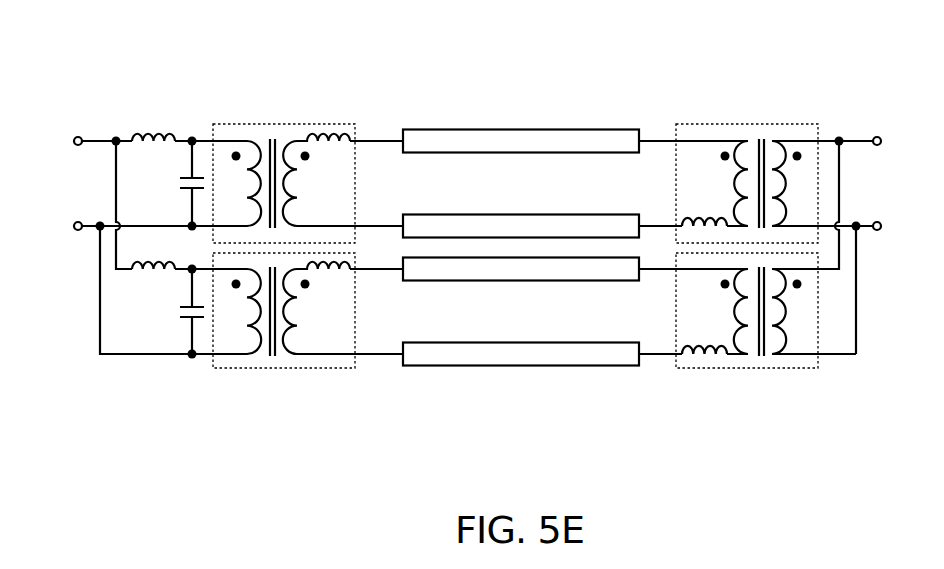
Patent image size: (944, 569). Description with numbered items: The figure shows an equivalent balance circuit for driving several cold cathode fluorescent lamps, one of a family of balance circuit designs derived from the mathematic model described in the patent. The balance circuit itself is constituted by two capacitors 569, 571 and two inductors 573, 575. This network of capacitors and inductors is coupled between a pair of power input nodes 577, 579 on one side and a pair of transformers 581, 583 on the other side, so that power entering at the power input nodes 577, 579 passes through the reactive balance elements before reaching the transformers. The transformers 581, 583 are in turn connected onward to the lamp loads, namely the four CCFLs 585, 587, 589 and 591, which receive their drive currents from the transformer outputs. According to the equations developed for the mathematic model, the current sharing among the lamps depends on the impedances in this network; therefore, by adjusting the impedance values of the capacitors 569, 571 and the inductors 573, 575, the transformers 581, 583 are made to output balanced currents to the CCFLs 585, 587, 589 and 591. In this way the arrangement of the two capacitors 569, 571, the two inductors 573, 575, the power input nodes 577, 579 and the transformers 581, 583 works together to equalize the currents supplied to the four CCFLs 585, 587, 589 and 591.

The capacitor 569 is at (203, 172).
The capacitor 571 is at (205, 310).
The inductor 573 is at (155, 122).
The inductor 575 is at (157, 280).
The power input node 577 is at (65, 133).
The power input node 579 is at (73, 228).
The transformer 581 is at (303, 123).
The transformer 583 is at (315, 372).
The CCFL 585 is at (593, 135).
The CCFL 587 is at (448, 223).
The CCFL 589 is at (580, 280).
The CCFL 591 is at (463, 365).